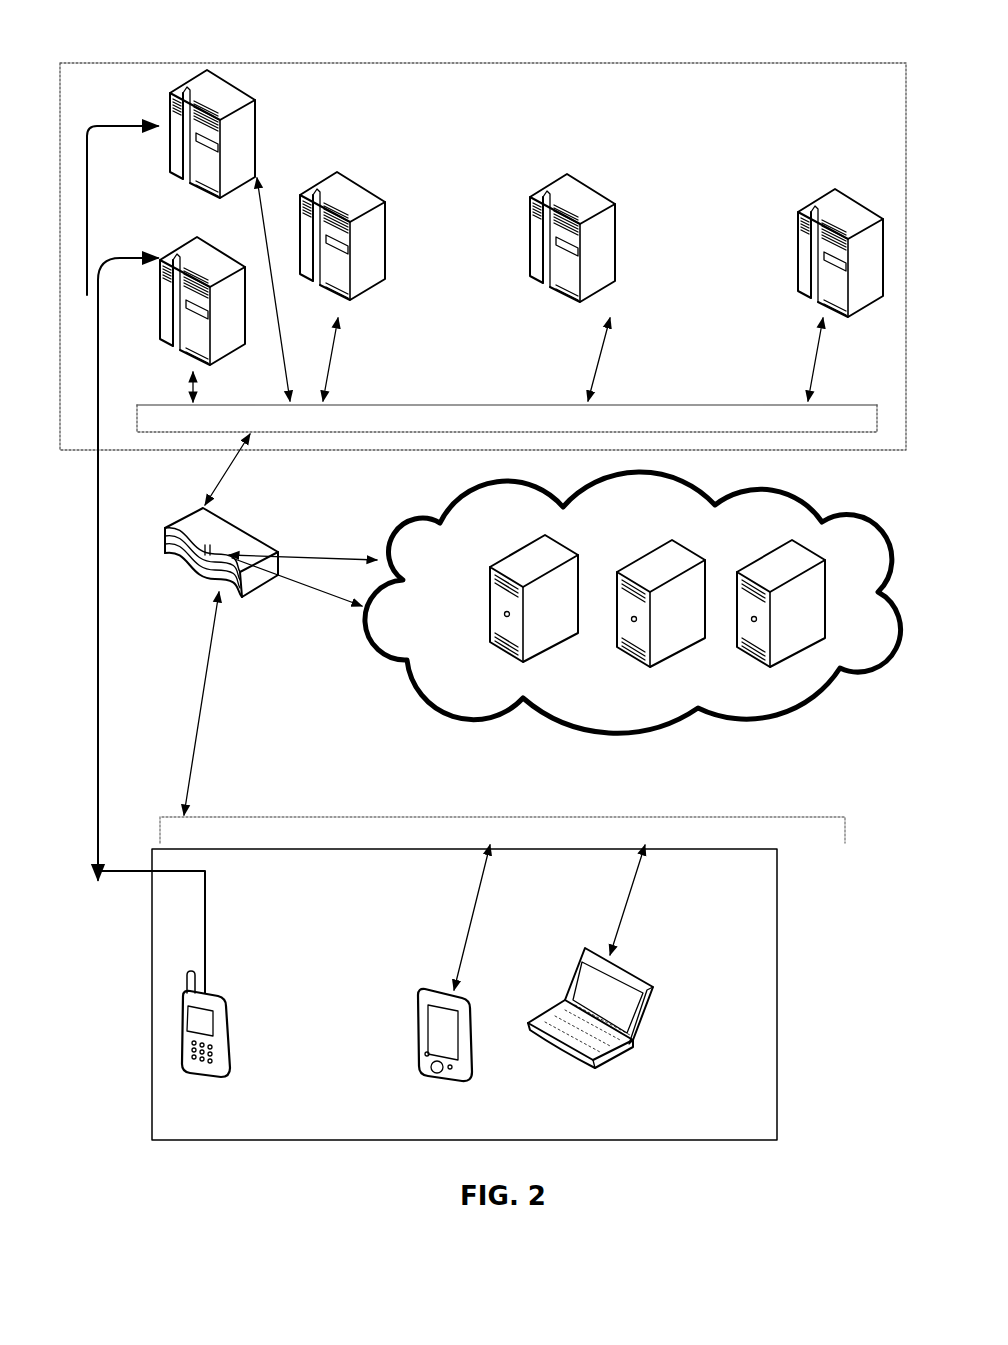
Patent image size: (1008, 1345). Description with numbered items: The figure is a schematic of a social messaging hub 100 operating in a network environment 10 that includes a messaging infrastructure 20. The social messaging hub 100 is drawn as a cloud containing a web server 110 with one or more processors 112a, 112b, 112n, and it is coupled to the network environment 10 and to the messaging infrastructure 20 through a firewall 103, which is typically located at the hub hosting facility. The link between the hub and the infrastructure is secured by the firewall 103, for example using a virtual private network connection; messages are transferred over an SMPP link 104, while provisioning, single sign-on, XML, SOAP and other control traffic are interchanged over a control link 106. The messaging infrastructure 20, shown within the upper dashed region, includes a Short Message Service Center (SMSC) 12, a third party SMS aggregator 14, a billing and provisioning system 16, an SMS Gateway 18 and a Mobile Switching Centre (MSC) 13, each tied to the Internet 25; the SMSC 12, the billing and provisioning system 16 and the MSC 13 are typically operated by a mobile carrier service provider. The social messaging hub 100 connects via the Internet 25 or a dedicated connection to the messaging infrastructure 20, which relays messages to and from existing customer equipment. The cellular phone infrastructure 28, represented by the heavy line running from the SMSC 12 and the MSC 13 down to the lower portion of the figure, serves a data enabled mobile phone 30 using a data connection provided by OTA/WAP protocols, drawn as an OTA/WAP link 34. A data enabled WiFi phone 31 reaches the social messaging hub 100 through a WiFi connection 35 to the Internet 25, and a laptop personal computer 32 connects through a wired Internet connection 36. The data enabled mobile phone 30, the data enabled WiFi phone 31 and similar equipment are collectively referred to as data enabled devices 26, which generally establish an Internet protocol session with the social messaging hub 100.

The network environment 10 is at (136, 46).
The Short Message Service Center (SMSC) 12 is at (178, 285).
The Mobile Switching Centre (MSC) 13 is at (232, 134).
The third party SMS aggregator 14 is at (400, 228).
The billing and provisioning system 16 is at (845, 225).
The SMS Gateway (SMS-GW) 18 is at (567, 218).
The messaging infrastructure 20 is at (499, 352).
The Internet 25 is at (507, 624).
The data enabled device 26 is at (447, 1110).
The cellular phone infrastructure 28 is at (107, 668).
The data enabled mobile phone 30 is at (225, 995).
The data enabled WiFi phone 31 is at (464, 995).
The laptop personal computer 32 is at (654, 966).
The OTA/WAP link 34 is at (207, 875).
The WiFi link 35 is at (483, 882).
The wired Internet connection 36 is at (637, 877).
The social messaging hub 100 is at (433, 730).
The firewall 103 is at (221, 565).
The SMPP link 104 is at (340, 555).
The control link 106 is at (330, 597).
The web server 110 is at (633, 602).
The processor 112a is at (534, 598).
The processor 112b is at (661, 603).
The processor 112n is at (781, 603).